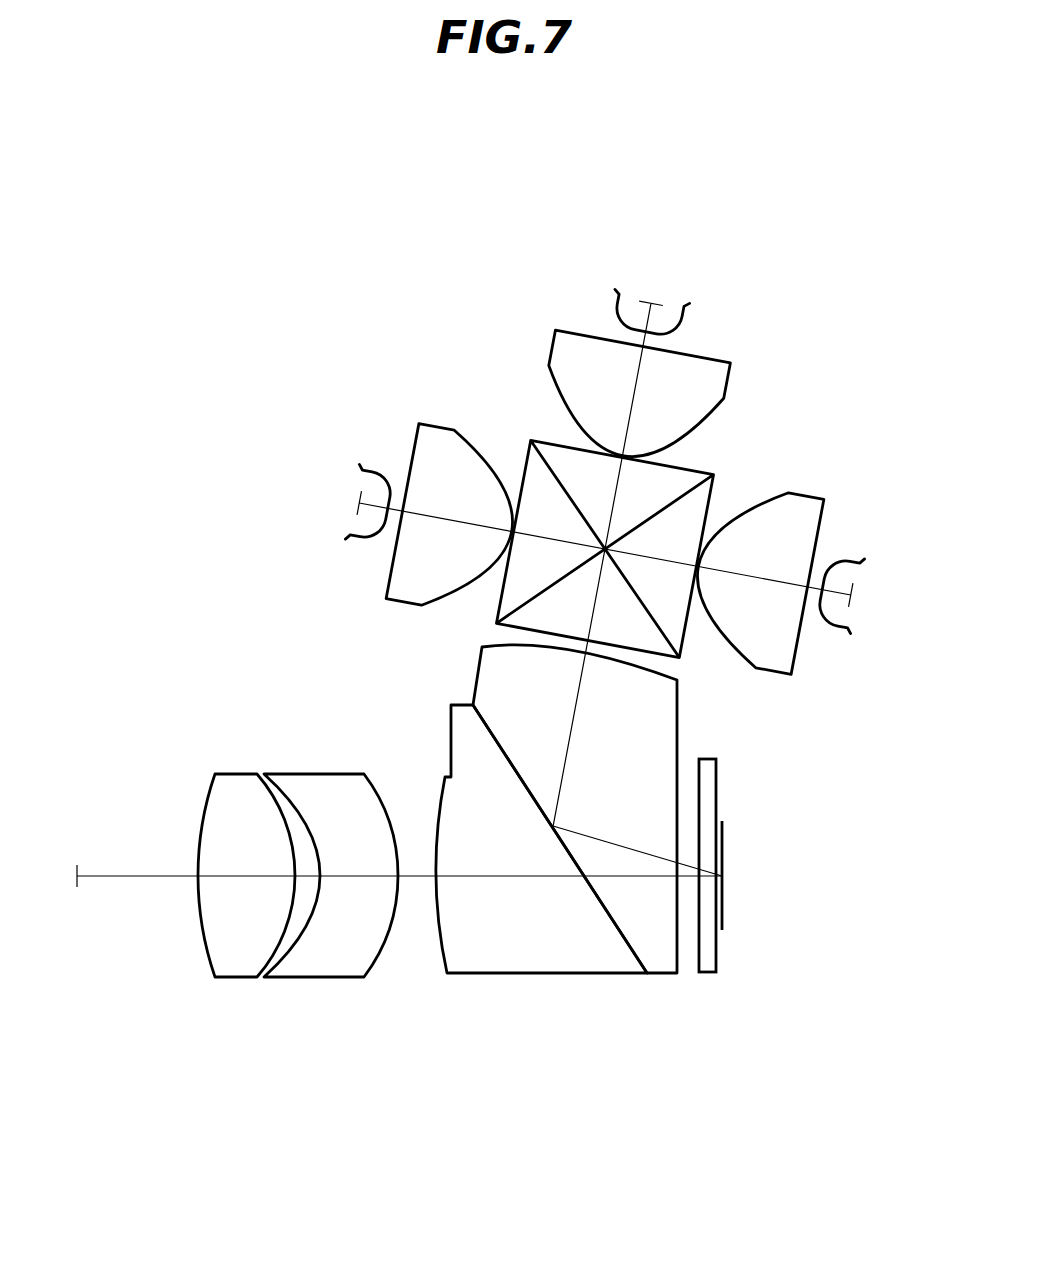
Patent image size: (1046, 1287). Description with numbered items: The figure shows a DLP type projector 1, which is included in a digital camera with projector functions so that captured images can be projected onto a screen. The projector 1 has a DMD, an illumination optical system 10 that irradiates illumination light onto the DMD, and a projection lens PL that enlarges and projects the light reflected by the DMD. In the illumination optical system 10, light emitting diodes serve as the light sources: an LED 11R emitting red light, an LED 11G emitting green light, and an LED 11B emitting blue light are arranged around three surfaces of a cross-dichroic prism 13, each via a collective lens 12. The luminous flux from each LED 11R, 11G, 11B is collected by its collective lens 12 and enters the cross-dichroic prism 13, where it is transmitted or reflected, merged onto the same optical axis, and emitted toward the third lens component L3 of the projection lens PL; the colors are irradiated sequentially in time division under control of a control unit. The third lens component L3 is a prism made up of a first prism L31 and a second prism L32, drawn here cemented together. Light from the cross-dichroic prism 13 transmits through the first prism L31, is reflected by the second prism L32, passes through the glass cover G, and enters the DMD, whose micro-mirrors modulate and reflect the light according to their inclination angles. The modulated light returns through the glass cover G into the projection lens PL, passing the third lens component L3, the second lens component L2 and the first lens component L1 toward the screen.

The projector 1 is at (500, 198).
The illumination optical system 10 is at (843, 320).
The LED 11G is at (688, 313).
The LED 11R is at (373, 478).
The LED 11B is at (858, 560).
The collective lens 12 is at (712, 378).
The cross-dichroic prism 13 is at (693, 470).
The glass cover G is at (704, 765).
The element DMD is at (724, 826).
The first lens component L1 is at (233, 979).
The second lens component L2 is at (320, 979).
The third lens component L3 is at (687, 1048).
The first prism L31 is at (657, 979).
The second prism L32 is at (553, 979).
The projection lens PL is at (635, 1091).